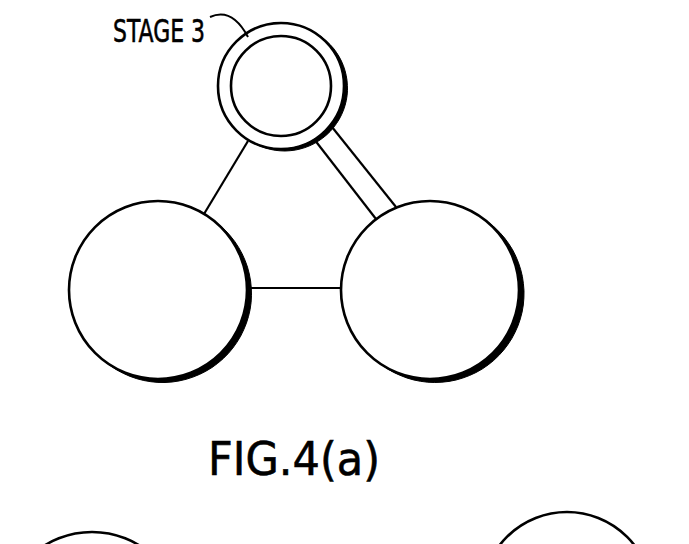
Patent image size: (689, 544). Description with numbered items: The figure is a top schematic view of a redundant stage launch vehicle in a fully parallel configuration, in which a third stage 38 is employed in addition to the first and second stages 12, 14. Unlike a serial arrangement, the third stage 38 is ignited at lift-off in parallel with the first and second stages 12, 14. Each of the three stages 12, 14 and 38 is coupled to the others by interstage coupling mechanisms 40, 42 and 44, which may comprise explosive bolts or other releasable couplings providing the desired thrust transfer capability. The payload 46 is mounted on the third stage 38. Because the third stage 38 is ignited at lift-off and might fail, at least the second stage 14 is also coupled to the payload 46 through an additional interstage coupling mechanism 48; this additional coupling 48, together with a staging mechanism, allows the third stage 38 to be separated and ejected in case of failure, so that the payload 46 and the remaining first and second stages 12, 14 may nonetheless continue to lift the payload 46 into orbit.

The first stage 12 is at (79, 334).
The second stage 14 is at (517, 267).
The third stage 38 is at (325, 42).
The interstage coupling mechanism 40 is at (288, 288).
The interstage coupling mechanism 42 is at (227, 177).
The interstage coupling mechanism 44 is at (358, 160).
The payload 46 is at (339, 107).
The additional interstage coupling mechanism 48 is at (347, 182).